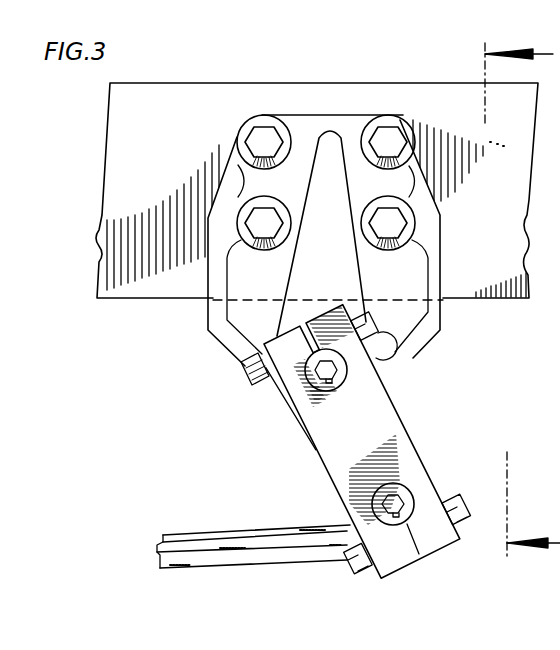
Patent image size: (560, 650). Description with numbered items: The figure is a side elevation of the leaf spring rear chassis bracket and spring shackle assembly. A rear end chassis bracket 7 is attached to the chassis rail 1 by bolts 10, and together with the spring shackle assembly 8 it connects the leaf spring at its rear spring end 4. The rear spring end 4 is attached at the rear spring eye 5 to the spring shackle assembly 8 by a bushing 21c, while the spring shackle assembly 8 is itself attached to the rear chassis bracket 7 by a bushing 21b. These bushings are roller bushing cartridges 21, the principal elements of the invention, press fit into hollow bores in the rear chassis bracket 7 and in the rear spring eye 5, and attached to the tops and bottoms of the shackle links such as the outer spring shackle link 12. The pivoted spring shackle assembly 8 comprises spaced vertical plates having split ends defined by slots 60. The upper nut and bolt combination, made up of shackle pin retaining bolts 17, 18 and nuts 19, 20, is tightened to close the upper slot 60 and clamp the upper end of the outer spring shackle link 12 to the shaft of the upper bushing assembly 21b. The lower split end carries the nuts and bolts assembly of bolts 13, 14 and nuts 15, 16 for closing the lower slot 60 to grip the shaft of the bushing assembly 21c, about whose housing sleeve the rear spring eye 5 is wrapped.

The chassis rail 1 is at (218, 110).
The rear spring end 4 is at (192, 545).
The rear spring eye 5 is at (522, 303).
The rear end chassis bracket 7 is at (445, 328).
The spring shackle assembly 8 is at (416, 444).
The bolts 10 is at (398, 130).
The outer spring shackle link 12 is at (356, 435).
The shackle pin retaining bolt 13 is at (321, 565).
The shackle pin retaining bolt 14 is at (348, 568).
The nut 15 is at (469, 537).
The nut 16 is at (466, 524).
The shackle pin retaining bolt 17 is at (211, 373).
The shackle pin retaining bolt 18 is at (250, 372).
The nut 19 is at (413, 348).
The nut 20 is at (383, 330).
The roller bushing cartridges 21 is at (357, 436).
The bushing 21b is at (296, 394).
The bushing 21c is at (352, 498).
The slots 60 is at (303, 325).